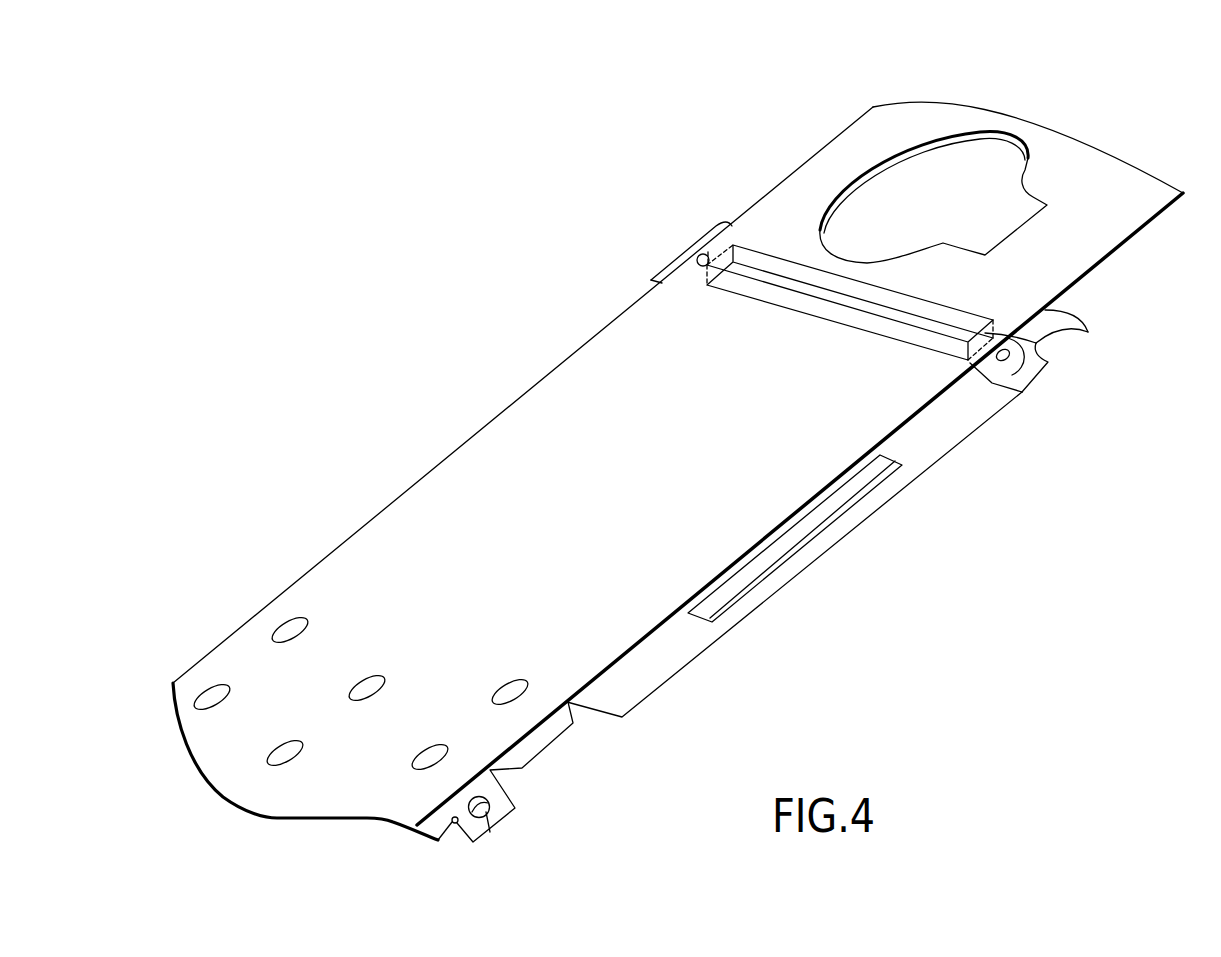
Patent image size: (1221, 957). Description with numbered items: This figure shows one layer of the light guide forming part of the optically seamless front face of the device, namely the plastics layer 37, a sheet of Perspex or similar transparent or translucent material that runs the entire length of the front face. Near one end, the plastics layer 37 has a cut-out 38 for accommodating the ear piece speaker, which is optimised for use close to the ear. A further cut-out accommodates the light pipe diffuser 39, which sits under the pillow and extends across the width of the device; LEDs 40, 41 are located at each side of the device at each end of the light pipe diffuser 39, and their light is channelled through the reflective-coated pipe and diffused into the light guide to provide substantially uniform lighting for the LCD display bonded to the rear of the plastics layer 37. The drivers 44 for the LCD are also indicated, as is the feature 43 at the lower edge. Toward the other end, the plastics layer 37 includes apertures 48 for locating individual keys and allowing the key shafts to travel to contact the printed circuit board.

The plastics layer 37 is at (1133, 237).
The cut-out 38 is at (980, 157).
The light pipe diffuser 39 is at (1086, 333).
The LED 40 is at (1043, 342).
The LED 41 is at (697, 257).
The boss 43 is at (497, 812).
The drivers 44 is at (823, 508).
The apertures 48 is at (285, 632).